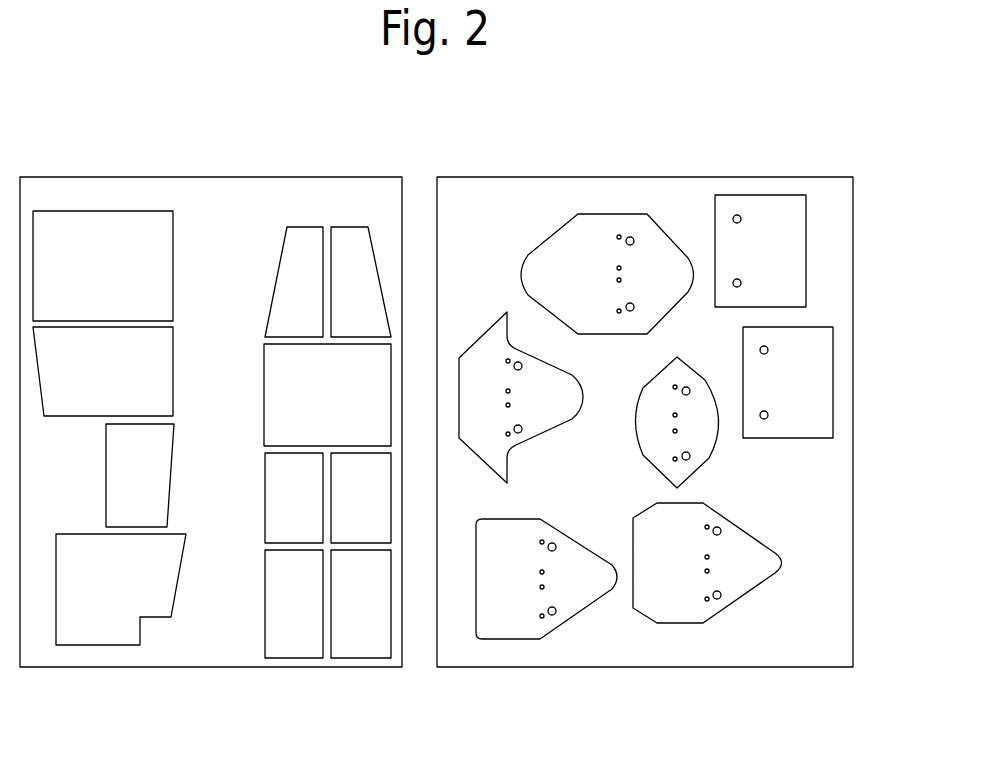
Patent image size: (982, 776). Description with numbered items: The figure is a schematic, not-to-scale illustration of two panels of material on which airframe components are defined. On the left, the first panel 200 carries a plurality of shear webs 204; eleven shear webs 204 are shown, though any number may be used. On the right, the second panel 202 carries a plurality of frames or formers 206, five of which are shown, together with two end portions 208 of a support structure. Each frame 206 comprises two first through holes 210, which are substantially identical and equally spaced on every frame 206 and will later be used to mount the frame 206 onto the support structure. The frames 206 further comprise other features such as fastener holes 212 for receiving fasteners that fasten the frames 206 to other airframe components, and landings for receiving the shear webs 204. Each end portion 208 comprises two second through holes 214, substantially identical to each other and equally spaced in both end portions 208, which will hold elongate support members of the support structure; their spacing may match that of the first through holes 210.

The first panel 200 is at (117, 177).
The second panel 202 is at (462, 177).
The shear webs 204 is at (162, 355).
The frames 206 is at (484, 336).
The end portions 208 is at (793, 208).
The first through holes 210 is at (522, 427).
The fastener holes 212 is at (619, 235).
The second through holes 214 is at (740, 279).